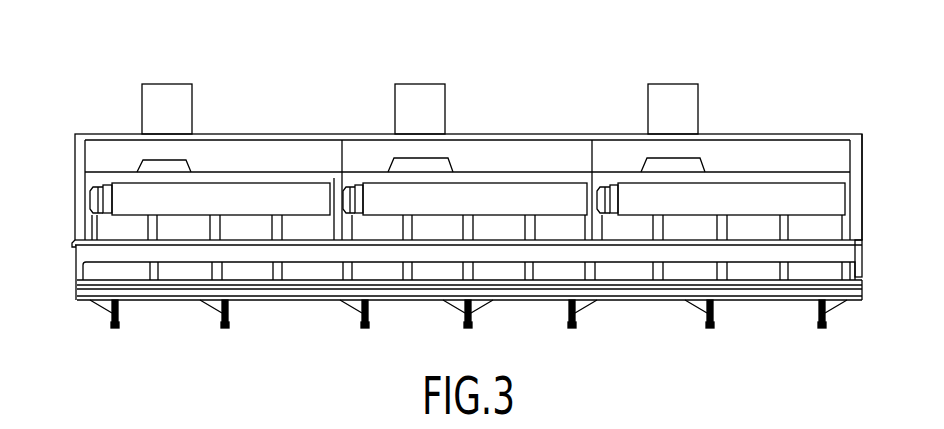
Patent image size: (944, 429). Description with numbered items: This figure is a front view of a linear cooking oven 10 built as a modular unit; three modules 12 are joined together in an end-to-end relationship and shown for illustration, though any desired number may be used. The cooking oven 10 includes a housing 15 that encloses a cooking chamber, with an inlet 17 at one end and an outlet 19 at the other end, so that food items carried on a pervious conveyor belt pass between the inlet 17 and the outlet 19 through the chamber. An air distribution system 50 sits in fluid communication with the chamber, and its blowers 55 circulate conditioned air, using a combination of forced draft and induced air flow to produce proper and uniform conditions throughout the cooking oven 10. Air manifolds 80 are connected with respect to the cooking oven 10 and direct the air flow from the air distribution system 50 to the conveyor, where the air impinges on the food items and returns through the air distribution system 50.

The cooking oven 10 is at (91, 112).
The module 12 is at (273, 131).
The housing 15 is at (845, 128).
The inlet 17 is at (77, 251).
The outlet 19 is at (860, 260).
The air distribution system 50 is at (183, 112).
The blower 55 is at (185, 167).
The air manifold 80 is at (123, 228).